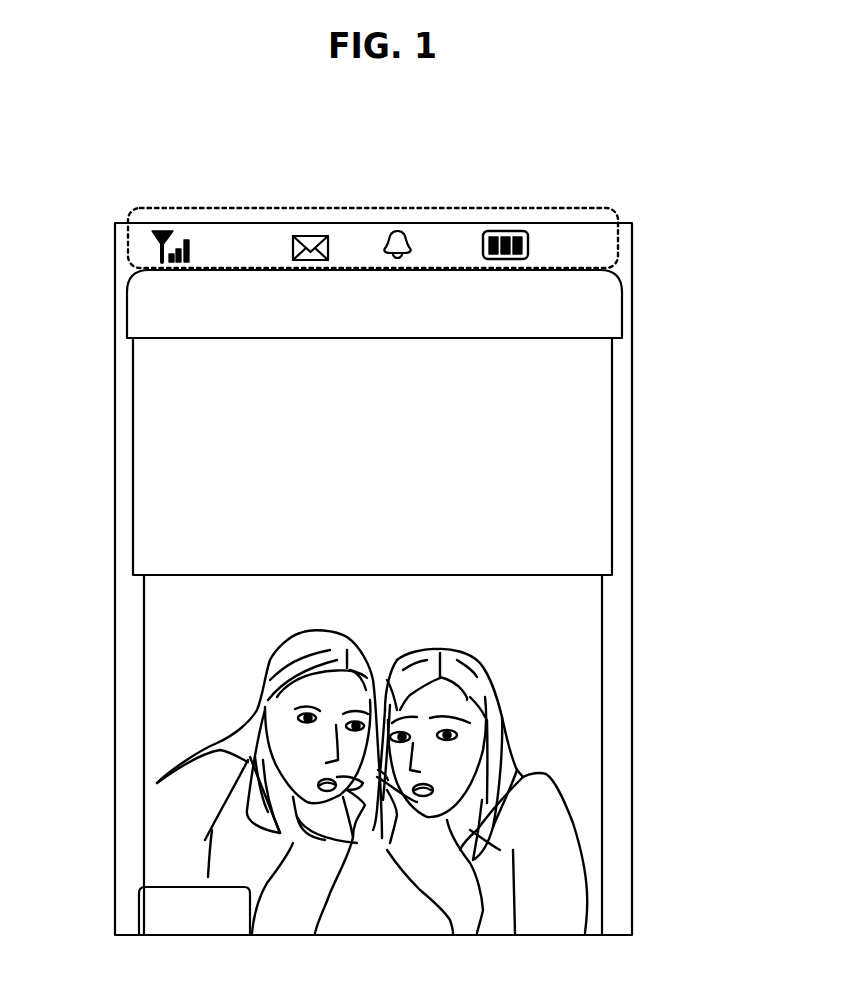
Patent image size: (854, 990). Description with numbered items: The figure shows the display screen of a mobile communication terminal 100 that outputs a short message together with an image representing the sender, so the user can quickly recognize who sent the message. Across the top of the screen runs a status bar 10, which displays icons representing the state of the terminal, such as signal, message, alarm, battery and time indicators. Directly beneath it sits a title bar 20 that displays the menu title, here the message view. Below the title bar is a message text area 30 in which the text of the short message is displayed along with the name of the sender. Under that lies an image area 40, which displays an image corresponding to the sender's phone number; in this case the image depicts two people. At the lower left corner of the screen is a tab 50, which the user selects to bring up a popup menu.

The mobile terminal 100 is at (483, 172).
The status bar 10 is at (617, 214).
The title bar 20 is at (622, 300).
The message text area 30 is at (612, 452).
The image area 40 is at (602, 715).
The tab 50 is at (141, 921).